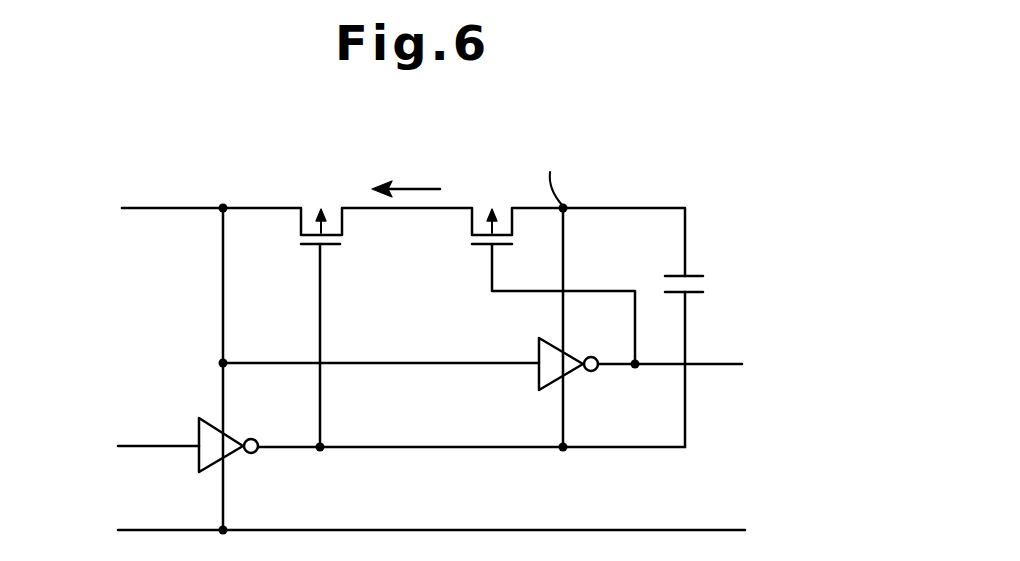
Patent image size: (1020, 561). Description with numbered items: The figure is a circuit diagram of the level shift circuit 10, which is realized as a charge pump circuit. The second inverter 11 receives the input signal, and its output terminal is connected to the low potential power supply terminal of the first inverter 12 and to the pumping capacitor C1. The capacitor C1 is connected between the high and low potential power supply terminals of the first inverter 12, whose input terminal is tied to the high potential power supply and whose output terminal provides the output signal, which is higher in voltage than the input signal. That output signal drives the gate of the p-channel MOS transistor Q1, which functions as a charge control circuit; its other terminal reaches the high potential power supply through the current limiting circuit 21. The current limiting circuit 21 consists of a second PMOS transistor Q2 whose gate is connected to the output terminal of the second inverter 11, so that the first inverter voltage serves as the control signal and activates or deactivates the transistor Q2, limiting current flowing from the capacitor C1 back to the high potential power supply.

The level shift circuit 10 is at (742, 194).
The second inverter 11 is at (199, 432).
The first inverter 12 is at (539, 353).
The current limiting circuit 21 is at (298, 174).
The p-channel MOS transistor Q1 is at (478, 246).
The second PMOS transistor Q2 is at (330, 246).
The pumping capacitor C1 is at (690, 276).